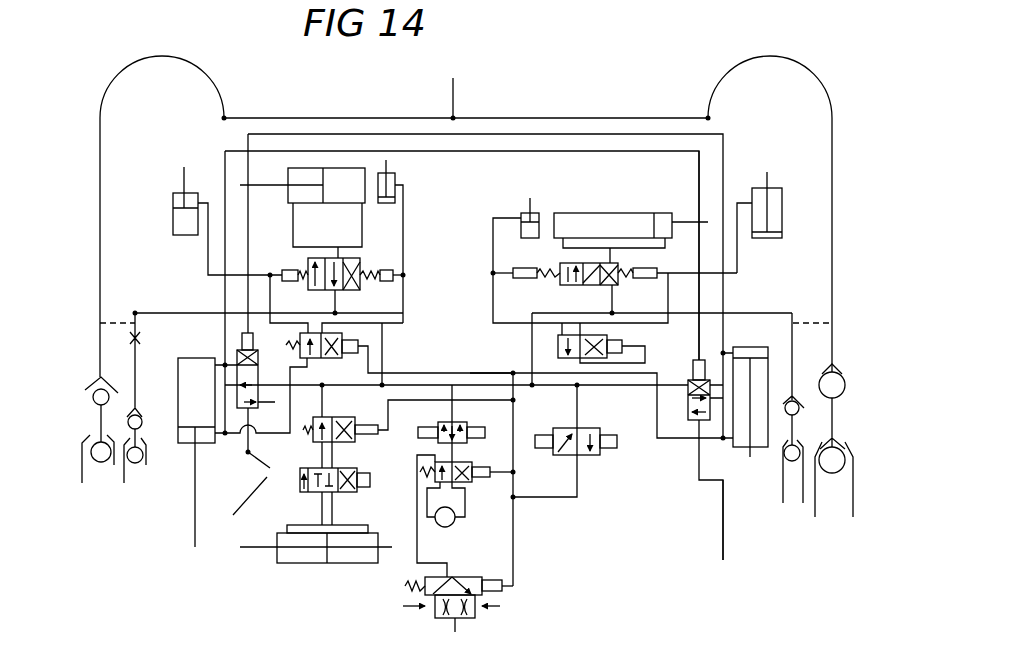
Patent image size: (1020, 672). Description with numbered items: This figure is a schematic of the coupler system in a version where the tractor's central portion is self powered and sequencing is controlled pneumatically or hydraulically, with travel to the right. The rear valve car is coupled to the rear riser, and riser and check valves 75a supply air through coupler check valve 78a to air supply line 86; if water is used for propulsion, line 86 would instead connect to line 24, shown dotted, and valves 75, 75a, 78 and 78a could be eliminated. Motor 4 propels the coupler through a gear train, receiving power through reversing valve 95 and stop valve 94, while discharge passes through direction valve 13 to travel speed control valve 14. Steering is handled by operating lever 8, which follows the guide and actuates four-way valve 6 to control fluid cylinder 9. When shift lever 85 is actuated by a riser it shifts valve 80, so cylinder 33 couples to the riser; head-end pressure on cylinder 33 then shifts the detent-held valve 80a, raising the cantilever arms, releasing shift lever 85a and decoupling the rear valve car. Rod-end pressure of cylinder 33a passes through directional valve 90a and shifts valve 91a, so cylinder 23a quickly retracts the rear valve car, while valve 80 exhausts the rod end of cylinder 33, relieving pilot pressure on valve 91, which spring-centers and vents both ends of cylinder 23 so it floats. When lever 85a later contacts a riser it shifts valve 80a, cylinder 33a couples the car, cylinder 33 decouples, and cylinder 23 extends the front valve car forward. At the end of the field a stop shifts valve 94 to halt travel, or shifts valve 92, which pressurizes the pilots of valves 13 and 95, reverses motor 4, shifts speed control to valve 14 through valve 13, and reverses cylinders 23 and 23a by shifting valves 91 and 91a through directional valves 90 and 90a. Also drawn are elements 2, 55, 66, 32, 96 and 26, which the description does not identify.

The main supply conduit 2 is at (456, 106).
The line 24 is at (809, 72).
The pressure cylinder 55 is at (173, 207).
The cylinder 23a is at (290, 182).
The pressure switch cylinder 66 is at (452, 180).
The cylinder 23 is at (613, 214).
The valve 91a is at (352, 288).
The valve 91 is at (558, 284).
The valve 80a is at (259, 366).
The directional valve 90a is at (337, 359).
The air supply line 86 is at (478, 373).
The directional valve 90 is at (556, 338).
The valve 80 is at (688, 379).
The cylinder 33 is at (762, 348).
The cylinder 33a is at (207, 446).
The pump 32 is at (840, 379).
The coupler check valve 78a is at (138, 417).
The valve 78 is at (799, 412).
The control valve 96 is at (338, 418).
The operating lever 8 is at (362, 476).
The four-way valve 6 is at (360, 490).
The stop valve 94 is at (458, 423).
The reversing valve 95 is at (472, 483).
The hydraulic motor 4 is at (457, 525).
The valve 92 is at (590, 458).
The direction valve 13 is at (458, 580).
The travel speed control valve 14 is at (433, 611).
The fluid cylinder 9 is at (310, 565).
The shift lever 85a is at (272, 482).
The shift lever 85 is at (722, 492).
The pump 26 is at (855, 485).
The riser and check valve 75a is at (125, 478).
The valve 75 is at (802, 503).